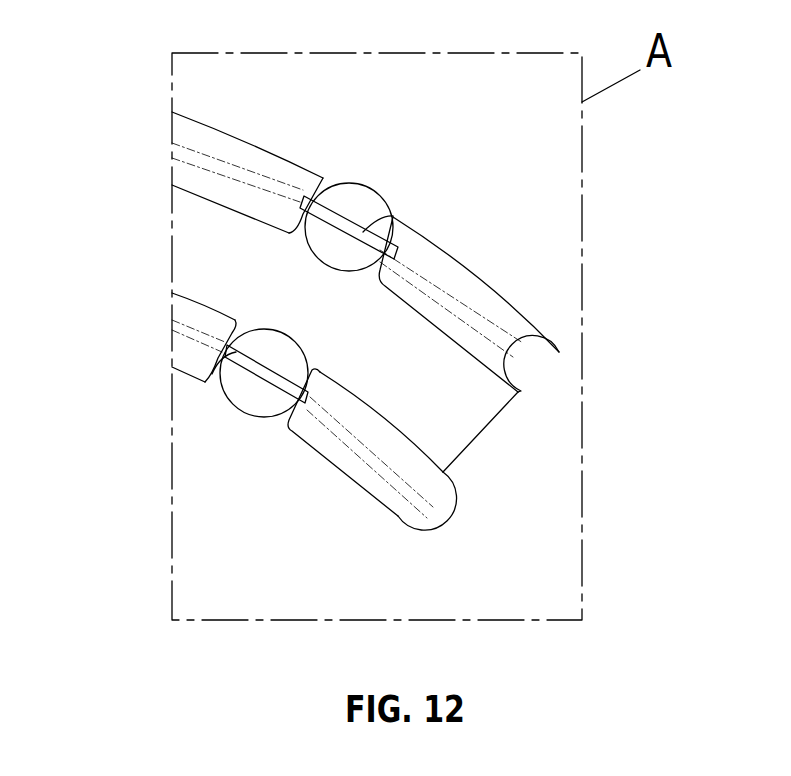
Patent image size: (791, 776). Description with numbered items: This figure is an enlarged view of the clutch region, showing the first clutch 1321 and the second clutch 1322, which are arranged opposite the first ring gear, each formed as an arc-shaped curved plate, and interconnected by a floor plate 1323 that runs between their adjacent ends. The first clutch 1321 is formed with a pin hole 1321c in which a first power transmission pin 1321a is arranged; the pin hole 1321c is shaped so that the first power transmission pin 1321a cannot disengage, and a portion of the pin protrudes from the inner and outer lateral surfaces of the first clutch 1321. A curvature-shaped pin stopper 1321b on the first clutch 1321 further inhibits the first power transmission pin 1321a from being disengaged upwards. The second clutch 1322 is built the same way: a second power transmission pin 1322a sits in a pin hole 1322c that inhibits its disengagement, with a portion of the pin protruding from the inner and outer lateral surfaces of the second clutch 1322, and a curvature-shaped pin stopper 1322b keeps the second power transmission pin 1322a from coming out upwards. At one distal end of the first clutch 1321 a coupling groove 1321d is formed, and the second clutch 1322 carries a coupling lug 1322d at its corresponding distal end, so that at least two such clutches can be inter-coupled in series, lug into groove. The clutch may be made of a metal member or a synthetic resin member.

The first clutch 1321 is at (433, 250).
The first power transmission pin 1321a is at (357, 200).
The pin stopper 1321b is at (395, 216).
The pin hole 1321c is at (299, 227).
The coupling groove 1321d is at (522, 362).
The second clutch 1322 is at (285, 456).
The second power transmission pin 1322a is at (247, 394).
The pin stopper 1322b is at (206, 384).
The pin hole 1322c is at (277, 421).
The coupling lug 1322d is at (438, 515).
The floor plate 1323 is at (470, 417).